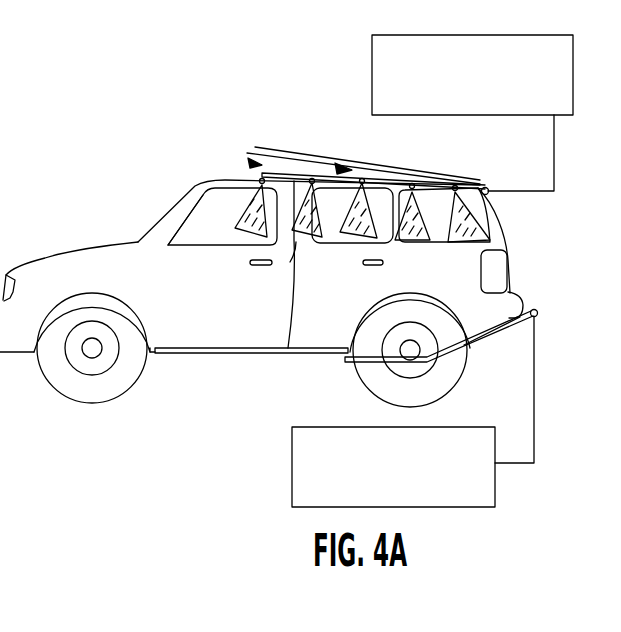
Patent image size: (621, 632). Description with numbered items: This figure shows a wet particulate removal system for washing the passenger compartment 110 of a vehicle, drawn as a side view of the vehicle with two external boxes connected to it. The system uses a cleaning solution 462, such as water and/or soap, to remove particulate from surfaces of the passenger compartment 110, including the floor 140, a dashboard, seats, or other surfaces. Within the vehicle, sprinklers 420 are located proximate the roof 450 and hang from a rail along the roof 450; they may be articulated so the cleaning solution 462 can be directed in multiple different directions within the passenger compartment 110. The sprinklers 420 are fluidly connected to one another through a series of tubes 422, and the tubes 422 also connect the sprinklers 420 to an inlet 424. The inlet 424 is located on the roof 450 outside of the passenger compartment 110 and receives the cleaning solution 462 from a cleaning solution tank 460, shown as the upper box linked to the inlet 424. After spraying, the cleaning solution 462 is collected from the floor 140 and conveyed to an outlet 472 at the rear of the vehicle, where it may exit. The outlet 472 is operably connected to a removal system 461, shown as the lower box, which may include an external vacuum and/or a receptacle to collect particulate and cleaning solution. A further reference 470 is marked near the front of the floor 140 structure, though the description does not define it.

The passenger compartment 110 is at (347, 306).
The floor 140 is at (213, 347).
The sprinklers 420 is at (358, 184).
The tubes 422 is at (404, 162).
The inlet 424 is at (485, 186).
The roof 450 is at (204, 197).
The cleaning solution tank 460 is at (474, 35).
The removal system 461 is at (445, 427).
The cleaning solution 462 is at (290, 262).
The running board mount 470 is at (152, 356).
The outlet 472 is at (537, 318).